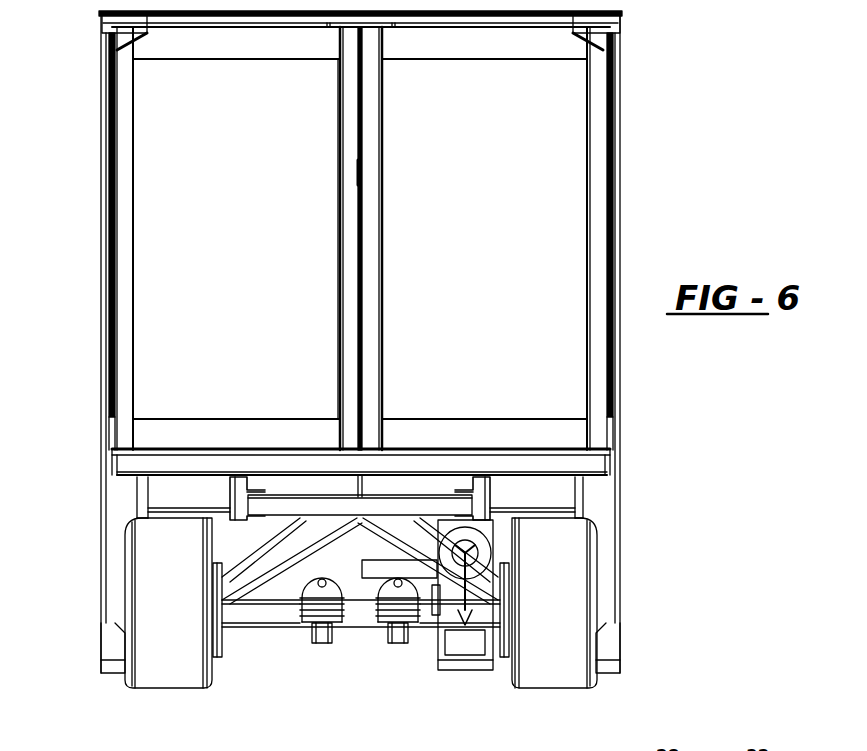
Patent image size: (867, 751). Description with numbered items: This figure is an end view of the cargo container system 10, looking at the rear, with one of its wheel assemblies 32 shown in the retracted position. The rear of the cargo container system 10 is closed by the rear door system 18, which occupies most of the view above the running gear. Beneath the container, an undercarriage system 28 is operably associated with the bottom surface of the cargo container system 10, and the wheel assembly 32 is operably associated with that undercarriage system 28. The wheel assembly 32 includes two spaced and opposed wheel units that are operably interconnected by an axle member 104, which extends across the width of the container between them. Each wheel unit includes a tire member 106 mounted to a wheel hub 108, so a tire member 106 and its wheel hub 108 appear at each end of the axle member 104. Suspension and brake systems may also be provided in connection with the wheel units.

The cargo container system 10 is at (80, 252).
The rear door system 18 is at (195, 378).
The undercarriage system 28 is at (593, 502).
The wheel assembly 32 is at (118, 694).
The axle member 104 is at (248, 617).
The tire member 106 is at (173, 653).
The wheel hub 108 is at (228, 655).